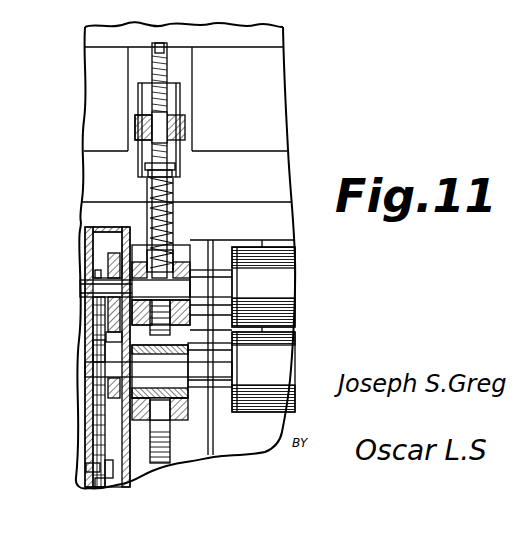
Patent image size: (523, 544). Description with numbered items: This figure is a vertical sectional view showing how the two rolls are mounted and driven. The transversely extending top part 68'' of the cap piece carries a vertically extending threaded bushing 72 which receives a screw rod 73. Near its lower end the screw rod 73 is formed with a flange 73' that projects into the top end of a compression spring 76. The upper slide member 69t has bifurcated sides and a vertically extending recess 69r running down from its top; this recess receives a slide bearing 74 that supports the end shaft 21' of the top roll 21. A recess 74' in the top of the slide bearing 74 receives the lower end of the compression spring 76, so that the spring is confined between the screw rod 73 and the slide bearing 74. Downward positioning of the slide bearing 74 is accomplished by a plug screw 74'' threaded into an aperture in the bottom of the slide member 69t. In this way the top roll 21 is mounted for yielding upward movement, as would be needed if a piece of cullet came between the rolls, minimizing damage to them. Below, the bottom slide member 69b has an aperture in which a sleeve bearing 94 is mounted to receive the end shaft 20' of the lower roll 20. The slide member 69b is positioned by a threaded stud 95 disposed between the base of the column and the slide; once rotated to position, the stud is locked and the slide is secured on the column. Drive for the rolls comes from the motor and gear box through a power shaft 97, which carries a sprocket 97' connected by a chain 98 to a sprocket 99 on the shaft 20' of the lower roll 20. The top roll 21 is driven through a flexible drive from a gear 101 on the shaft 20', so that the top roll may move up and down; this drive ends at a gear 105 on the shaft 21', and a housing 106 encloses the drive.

The screw rod 73 is at (189, 160).
The threaded bushing 72 is at (172, 122).
The transversely extending top part of cap piece 68'' is at (118, 126).
The flange 73' is at (187, 167).
The compression spring 76 is at (176, 194).
The housing 106 is at (84, 222).
The gear 105 is at (95, 257).
The slide bearing 74 is at (121, 258).
The recess 74' is at (138, 239).
The end shaft of top roll 21' is at (107, 287).
The vertically extending recess 69r is at (182, 262).
The upper slide member 69t is at (195, 262).
The plug screw 74'' is at (188, 306).
The top roll 21 is at (283, 287).
The lower roll 20 is at (266, 370).
The sleeve bearing 94 is at (176, 358).
The end shaft of lower roll 20' is at (128, 372).
The bottom slide member 69b is at (190, 410).
The threaded stud 95 is at (172, 436).
The power shaft 97 is at (71, 392).
The sprocket 99 is at (93, 362).
The gear 101 is at (93, 388).
The chain 98 is at (100, 398).
The sprocket 97' is at (133, 489).